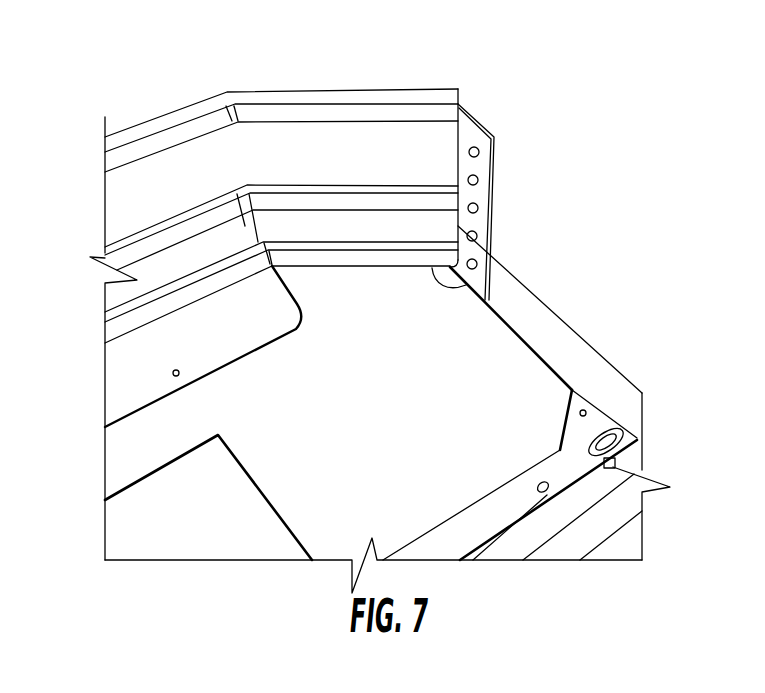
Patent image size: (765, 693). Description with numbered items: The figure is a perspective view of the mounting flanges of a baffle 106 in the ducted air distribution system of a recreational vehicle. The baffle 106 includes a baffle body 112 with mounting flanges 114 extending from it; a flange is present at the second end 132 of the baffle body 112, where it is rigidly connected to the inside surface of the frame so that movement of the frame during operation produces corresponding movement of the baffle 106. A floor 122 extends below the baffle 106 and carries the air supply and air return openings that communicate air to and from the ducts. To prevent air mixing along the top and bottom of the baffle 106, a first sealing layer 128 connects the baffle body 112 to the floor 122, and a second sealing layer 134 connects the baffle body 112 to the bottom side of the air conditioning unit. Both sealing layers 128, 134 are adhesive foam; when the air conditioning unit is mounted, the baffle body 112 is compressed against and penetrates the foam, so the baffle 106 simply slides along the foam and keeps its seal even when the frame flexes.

The baffle 106 is at (281, 130).
The baffle body 112 is at (127, 202).
The mounting flanges 114 is at (492, 200).
The floor 122 is at (550, 382).
The first sealing layer 128 is at (482, 284).
The second end 132 is at (433, 141).
The second sealing layer 134 is at (403, 95).